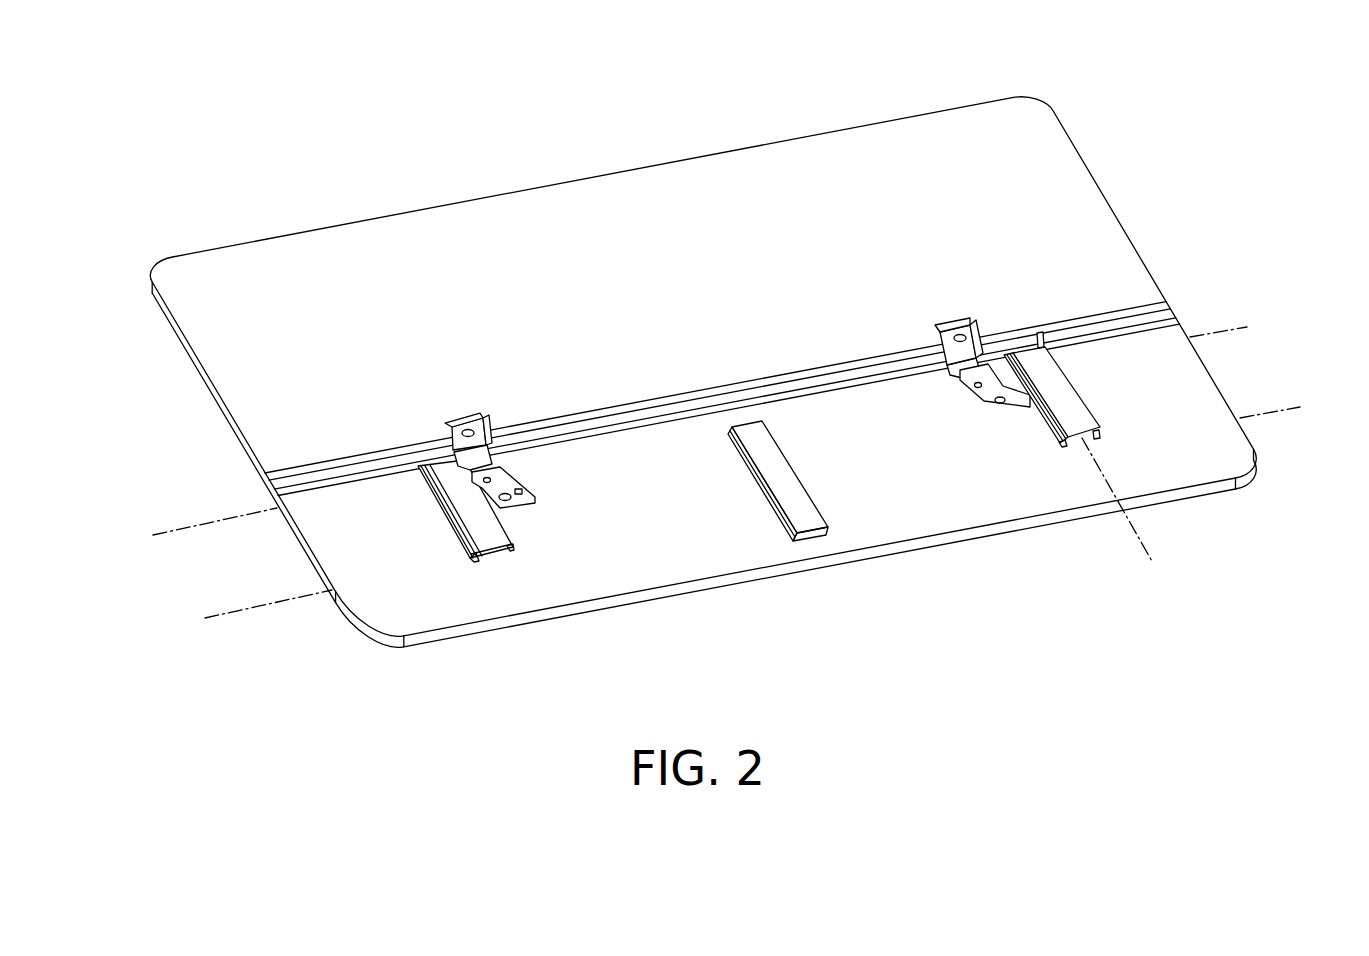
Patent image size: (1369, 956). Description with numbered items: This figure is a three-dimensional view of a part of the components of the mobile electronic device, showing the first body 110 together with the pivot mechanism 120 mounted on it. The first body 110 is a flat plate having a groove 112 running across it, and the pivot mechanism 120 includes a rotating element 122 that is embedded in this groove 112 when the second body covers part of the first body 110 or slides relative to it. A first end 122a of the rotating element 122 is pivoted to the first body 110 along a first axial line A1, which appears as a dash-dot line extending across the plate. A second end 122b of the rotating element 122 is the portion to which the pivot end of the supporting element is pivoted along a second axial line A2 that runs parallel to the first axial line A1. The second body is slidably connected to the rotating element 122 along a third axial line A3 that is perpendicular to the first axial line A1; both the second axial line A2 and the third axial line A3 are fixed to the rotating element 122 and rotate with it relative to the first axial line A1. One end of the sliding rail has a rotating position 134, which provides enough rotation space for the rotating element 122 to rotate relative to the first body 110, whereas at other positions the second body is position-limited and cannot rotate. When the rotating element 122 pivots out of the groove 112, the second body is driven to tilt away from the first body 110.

The first body 110 is at (1083, 190).
The groove 112 is at (1043, 407).
The pivot mechanism 120 is at (990, 440).
The rotating element 122 is at (1058, 380).
The first end 122a is at (1057, 357).
The second end 122b is at (1103, 433).
The rotating position 134 is at (1049, 338).
The first axial line A1 is at (190, 530).
The second axial line A2 is at (238, 615).
The third axial line A3 is at (1147, 557).